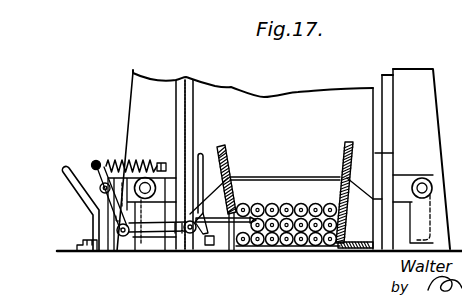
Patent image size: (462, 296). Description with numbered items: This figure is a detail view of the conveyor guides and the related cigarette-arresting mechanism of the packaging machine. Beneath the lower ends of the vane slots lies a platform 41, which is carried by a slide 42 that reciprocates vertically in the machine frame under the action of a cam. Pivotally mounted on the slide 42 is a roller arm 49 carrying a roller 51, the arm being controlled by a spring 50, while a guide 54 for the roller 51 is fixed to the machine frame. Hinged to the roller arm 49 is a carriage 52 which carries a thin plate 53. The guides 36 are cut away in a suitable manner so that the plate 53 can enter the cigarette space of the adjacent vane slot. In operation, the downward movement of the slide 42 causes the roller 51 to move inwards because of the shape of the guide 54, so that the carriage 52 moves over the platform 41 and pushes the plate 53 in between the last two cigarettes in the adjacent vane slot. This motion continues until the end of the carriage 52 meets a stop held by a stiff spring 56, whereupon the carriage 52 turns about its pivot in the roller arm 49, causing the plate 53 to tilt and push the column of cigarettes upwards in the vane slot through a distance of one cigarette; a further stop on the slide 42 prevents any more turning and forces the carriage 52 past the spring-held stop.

The guide 36 is at (228, 153).
The platform 41 is at (362, 250).
The slide 42 is at (341, 100).
The roller arm 49 is at (92, 167).
The spring 50 is at (116, 164).
The roller 51 is at (124, 237).
The carriage 52 is at (196, 234).
The thin plate 53 is at (225, 233).
The guide 54 is at (79, 192).
The stiff spring 56 is at (202, 234).